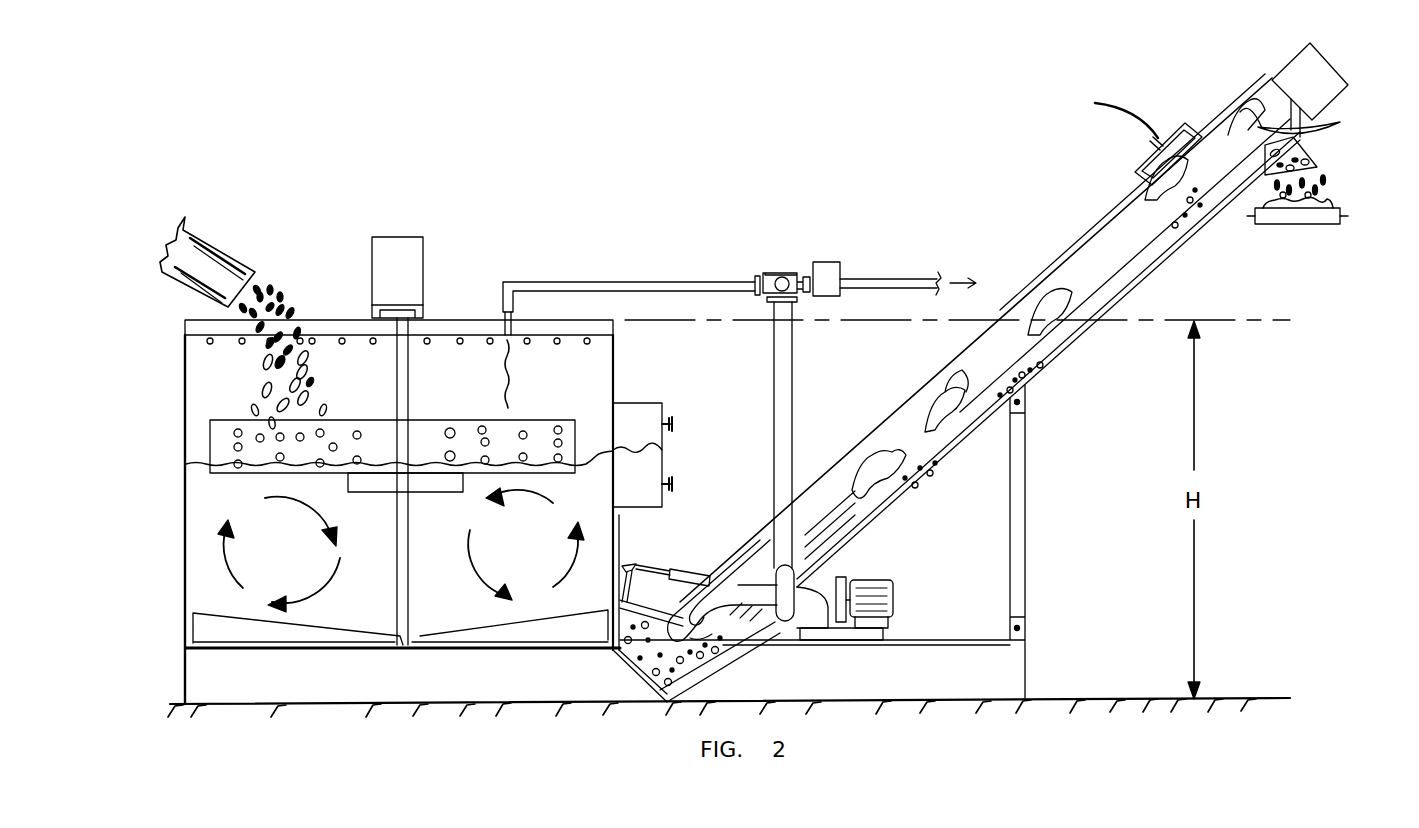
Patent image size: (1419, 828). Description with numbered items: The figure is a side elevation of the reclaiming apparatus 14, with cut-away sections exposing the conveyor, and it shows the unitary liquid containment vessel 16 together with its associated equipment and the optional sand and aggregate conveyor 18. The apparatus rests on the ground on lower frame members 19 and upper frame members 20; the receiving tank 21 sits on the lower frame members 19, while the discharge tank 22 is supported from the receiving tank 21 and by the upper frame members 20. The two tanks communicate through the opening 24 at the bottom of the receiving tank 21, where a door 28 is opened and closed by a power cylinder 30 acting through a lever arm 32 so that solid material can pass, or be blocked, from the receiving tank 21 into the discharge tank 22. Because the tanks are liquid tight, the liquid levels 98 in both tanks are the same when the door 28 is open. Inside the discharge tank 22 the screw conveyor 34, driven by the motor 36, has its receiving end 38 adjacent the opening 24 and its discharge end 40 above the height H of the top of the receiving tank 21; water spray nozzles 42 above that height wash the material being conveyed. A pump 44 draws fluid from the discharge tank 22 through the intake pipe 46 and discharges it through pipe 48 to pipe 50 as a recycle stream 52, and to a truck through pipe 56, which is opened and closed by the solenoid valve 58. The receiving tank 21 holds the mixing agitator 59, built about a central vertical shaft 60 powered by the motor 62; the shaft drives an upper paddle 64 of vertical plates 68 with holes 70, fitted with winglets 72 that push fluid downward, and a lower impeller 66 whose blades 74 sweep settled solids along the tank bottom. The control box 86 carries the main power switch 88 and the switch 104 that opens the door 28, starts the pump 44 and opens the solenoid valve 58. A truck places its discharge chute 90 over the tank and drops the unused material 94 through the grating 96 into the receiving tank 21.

The reclaiming apparatus 14 is at (641, 182).
The unitary liquid containment vessel 16 is at (613, 654).
The sand and aggregate conveyor 18 is at (1320, 226).
The lower frame members 19 is at (958, 702).
The upper frame members 20 is at (1026, 498).
The receiving tank 21 is at (613, 340).
The discharge tank 22 is at (1100, 228).
The opening/port 24 is at (612, 604).
The door 28 is at (662, 574).
The power cylinder 30 is at (714, 576).
The lever arm 32 is at (636, 566).
The screw conveyor 34 is at (1022, 318).
The motor 36 is at (1290, 72).
The receiving end 38 is at (635, 668).
The discharge end 40 is at (1308, 153).
The water spray nozzles 42 is at (1143, 183).
The pump 44 is at (838, 575).
The intake pipe 46 is at (722, 620).
The discharge pipe 48 is at (797, 418).
The recycle pipe 50 is at (540, 281).
The recycle stream 52 is at (509, 386).
The truck pipe 56 is at (893, 279).
The solenoid valve 58 is at (832, 261).
The mixing agitator 59 is at (416, 380).
The central vertical shaft 60 is at (412, 368).
The motor 62 is at (395, 236).
The upper paddle 64 is at (422, 412).
The lower impeller 66 is at (343, 618).
The vertical plates 68 is at (375, 420).
The holes 70 is at (240, 428).
The winglets 72 is at (400, 493).
The blades 74 is at (214, 618).
The control box 86 is at (640, 398).
The main power switch 88 is at (673, 420).
The discharge chute 90 is at (210, 236).
The unused material 94 is at (283, 292).
The grating 96 is at (333, 332).
The liquid levels 98 is at (882, 452).
The switch 104 is at (673, 486).